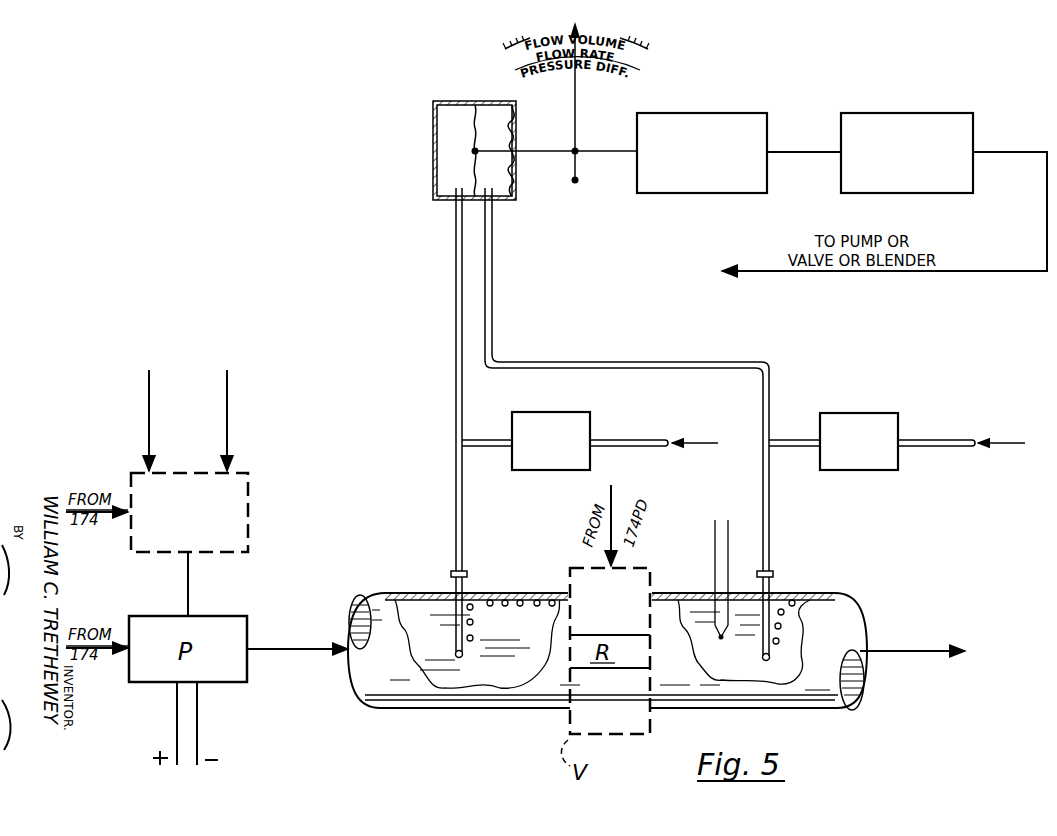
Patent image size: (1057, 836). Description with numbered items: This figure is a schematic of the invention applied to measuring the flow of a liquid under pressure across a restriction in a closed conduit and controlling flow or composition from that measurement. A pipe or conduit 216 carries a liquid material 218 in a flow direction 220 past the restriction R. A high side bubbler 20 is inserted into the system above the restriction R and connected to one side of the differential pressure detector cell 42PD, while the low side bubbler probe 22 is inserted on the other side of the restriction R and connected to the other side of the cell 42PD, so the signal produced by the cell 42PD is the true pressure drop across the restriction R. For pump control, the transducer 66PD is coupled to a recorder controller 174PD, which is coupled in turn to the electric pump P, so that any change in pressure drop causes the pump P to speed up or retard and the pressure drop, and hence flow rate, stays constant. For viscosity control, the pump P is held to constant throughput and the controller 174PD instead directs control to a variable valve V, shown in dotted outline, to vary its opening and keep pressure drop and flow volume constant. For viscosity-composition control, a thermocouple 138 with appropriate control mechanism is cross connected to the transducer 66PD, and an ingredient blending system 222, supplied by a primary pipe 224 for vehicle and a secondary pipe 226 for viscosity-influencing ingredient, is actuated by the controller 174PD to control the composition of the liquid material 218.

The differential pressure detector cell 42PD is at (452, 101).
The transducer 66PD is at (670, 113).
The recorder controller 174PD is at (876, 113).
The high side bubbler 20 is at (450, 628).
The low side bubbler probe 22 is at (756, 645).
The thermocouple 138 is at (721, 640).
The pipe or conduit 216 is at (845, 593).
The liquid material 218 is at (510, 681).
The flow direction 220 is at (898, 651).
The ingredient blending system 222 is at (250, 505).
The primary pipe 224 is at (149, 410).
The secondary pipe 226 is at (227, 407).